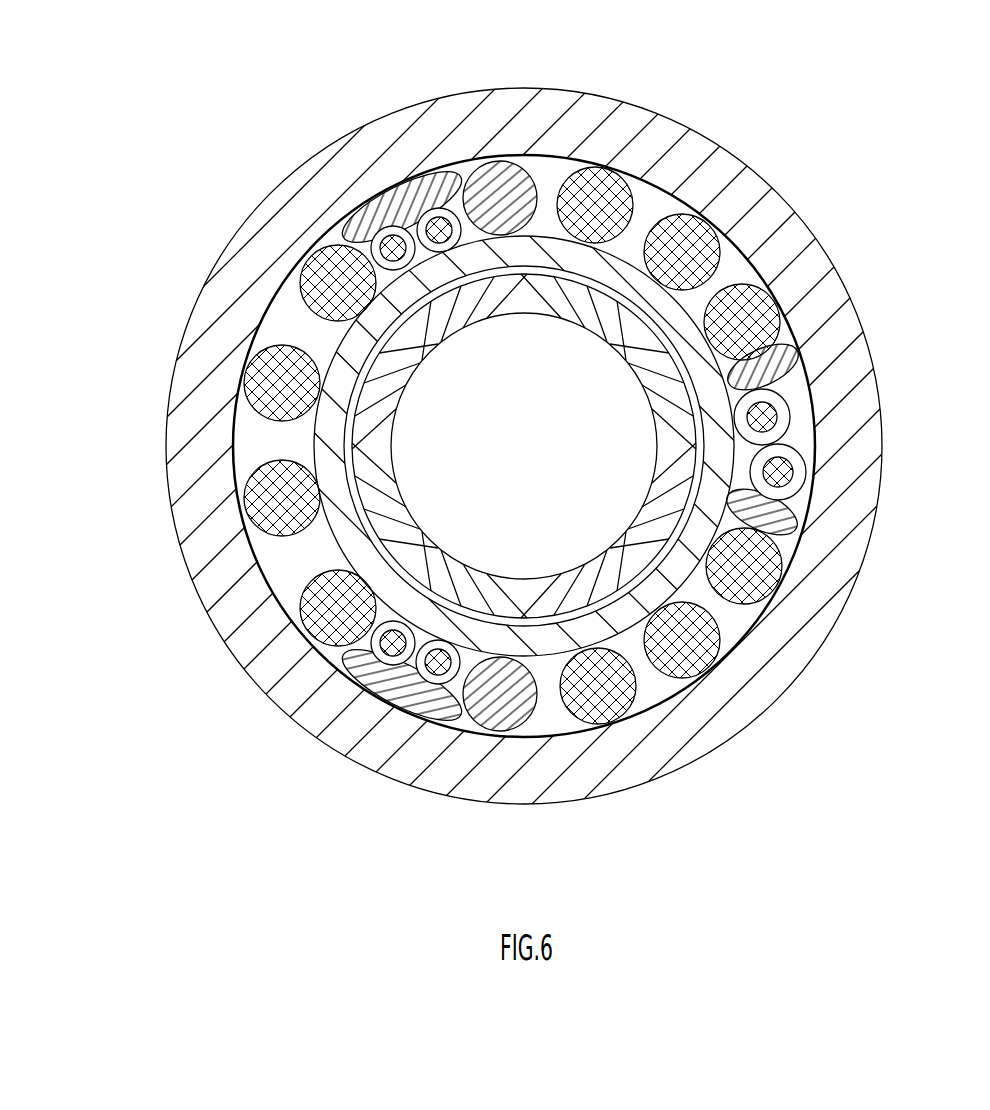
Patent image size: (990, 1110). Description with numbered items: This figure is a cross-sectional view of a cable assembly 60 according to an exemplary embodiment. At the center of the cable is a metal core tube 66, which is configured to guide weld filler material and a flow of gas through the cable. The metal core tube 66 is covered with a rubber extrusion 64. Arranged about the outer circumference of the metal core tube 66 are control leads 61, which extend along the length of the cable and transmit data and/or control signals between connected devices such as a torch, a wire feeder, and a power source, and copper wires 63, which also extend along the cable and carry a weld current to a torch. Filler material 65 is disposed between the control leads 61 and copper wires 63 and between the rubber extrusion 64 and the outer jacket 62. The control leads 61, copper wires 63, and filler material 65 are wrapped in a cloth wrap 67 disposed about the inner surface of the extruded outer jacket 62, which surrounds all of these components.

The cable 60 is at (109, 143).
The control leads 61 is at (417, 213).
The outer jacket 62 is at (167, 438).
The copper wires 63 is at (612, 190).
The rubber extrusion 64 is at (343, 525).
The filler material 65 is at (382, 228).
The metal core tube 66 is at (732, 292).
The cloth wrap 67 is at (672, 203).